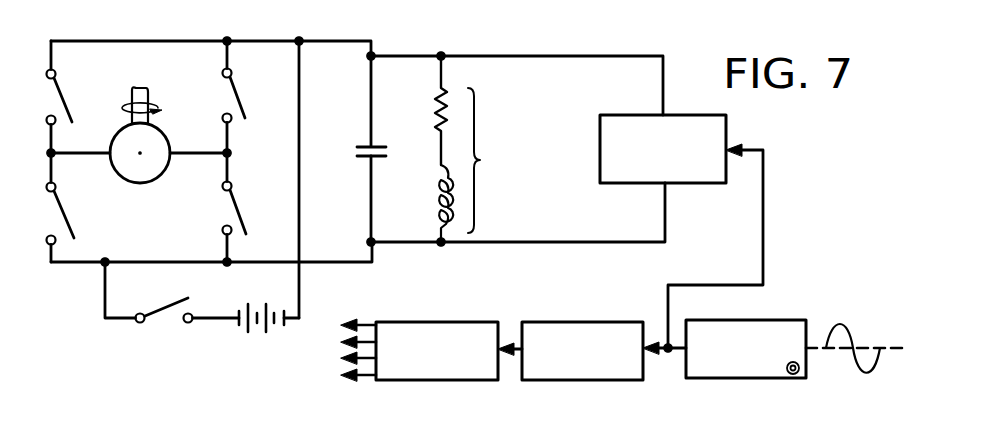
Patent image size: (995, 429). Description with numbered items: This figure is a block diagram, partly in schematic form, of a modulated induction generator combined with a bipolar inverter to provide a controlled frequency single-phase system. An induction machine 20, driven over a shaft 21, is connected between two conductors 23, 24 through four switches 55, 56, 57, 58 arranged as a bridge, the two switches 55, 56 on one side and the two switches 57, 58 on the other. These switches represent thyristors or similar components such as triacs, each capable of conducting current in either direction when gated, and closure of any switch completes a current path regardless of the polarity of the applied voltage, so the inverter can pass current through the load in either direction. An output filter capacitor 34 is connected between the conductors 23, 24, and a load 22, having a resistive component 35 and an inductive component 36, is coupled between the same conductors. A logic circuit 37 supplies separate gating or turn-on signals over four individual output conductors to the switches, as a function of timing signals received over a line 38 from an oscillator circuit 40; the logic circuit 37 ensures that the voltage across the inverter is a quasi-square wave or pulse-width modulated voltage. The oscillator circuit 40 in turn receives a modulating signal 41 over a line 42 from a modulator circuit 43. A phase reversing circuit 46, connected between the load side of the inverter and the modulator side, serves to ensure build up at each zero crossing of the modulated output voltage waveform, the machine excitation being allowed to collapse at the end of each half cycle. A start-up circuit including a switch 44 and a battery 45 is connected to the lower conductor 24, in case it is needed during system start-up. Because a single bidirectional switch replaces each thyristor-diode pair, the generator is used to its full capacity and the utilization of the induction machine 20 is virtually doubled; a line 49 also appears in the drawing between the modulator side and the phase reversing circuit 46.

The induction machine 20 is at (139, 192).
The shaft 21 is at (130, 92).
The load 22 is at (506, 160).
The conductor 23 is at (357, 164).
The conductor 24 is at (90, 268).
The output filter capacitor 34 is at (356, 151).
The resistive component 35 is at (424, 110).
The inductive component 36 is at (518, 205).
The logic circuit 37 is at (419, 337).
The line 38 is at (510, 345).
The oscillator circuit 40 is at (582, 336).
The modulating signal 41 is at (846, 328).
The line 42 is at (652, 342).
The modulator circuit 43 is at (746, 334).
The switch 44 is at (149, 306).
The battery 45 is at (246, 335).
The phase reversing circuit 46 is at (663, 134).
The control line 49 is at (724, 285).
The switch 55 is at (47, 97).
The switch 56 is at (46, 207).
The switch 57 is at (248, 97).
The switch 58 is at (249, 207).